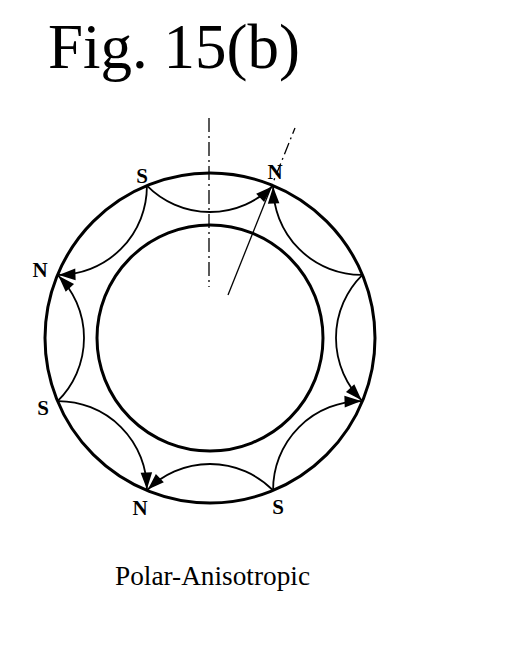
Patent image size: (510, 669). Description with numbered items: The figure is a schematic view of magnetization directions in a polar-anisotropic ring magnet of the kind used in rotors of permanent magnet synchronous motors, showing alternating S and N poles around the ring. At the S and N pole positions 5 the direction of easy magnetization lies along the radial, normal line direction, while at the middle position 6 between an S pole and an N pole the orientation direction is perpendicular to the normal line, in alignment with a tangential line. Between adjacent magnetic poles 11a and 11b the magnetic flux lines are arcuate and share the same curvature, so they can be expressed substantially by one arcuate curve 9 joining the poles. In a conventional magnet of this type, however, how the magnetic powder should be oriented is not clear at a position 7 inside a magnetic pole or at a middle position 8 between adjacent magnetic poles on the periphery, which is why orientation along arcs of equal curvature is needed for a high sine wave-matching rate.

The S and N pole positions 5 is at (267, 198).
The middle position between the magnetic poles 6 is at (208, 190).
The position inside the magnetic pole 7 is at (263, 465).
The middle position between adjacent magnetic poles on the periphery 8 is at (308, 448).
The arcuate curve 9 is at (342, 325).
The magnetic pole 11a is at (371, 405).
The magnetic pole 11b is at (366, 276).